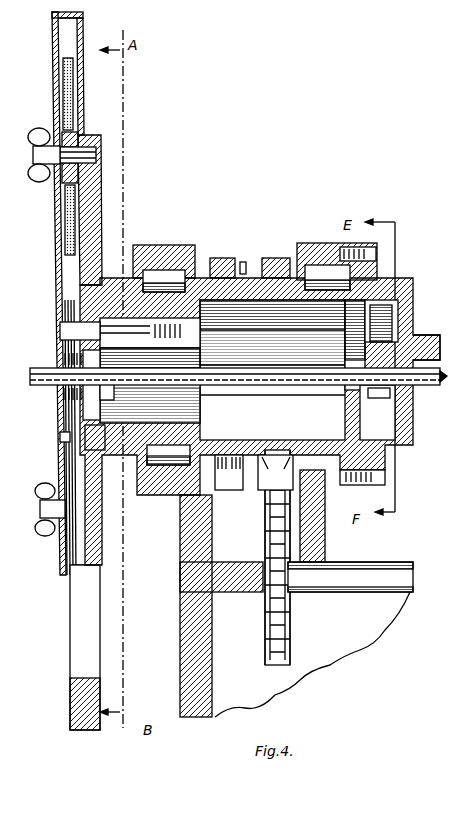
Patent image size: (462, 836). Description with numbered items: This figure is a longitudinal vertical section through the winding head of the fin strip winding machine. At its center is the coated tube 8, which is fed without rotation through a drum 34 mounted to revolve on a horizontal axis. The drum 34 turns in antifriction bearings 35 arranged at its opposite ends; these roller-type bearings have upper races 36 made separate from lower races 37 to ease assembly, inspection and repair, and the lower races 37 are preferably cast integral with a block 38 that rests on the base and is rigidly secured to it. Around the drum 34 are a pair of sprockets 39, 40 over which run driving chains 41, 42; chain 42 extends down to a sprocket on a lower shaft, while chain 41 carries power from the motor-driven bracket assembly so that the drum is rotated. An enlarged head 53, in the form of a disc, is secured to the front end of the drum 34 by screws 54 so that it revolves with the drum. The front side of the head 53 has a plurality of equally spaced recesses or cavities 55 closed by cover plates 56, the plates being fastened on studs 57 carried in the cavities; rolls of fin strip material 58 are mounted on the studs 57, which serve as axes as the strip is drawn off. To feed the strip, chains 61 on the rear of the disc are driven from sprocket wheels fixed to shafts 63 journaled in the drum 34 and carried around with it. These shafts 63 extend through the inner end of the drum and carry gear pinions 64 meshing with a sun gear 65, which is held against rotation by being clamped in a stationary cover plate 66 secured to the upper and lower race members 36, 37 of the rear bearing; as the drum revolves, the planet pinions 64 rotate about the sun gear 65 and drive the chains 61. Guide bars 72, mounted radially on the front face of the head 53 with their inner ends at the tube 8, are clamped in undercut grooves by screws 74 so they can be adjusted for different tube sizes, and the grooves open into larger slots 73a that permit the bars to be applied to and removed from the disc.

The coated tube 8 is at (242, 377).
The drum 34 is at (240, 276).
The antifriction bearings 35 is at (157, 278).
The upper races 36 is at (188, 255).
The lower races 37 is at (162, 483).
The block 38 is at (183, 545).
The sprocket 39 is at (226, 486).
The sprocket 40 is at (265, 470).
The driving chain 41 is at (225, 262).
The driving chain 42 is at (282, 266).
The head 53 is at (82, 698).
The screws 54 is at (70, 320).
The recesses or cavities 55 is at (68, 48).
The cover plates 56 is at (62, 272).
The studs 57 is at (33, 152).
The fin strip material 58 is at (70, 215).
The chains 61 is at (108, 385).
The shafts 63 is at (288, 322).
The gear pinions 64 is at (382, 316).
The sun gear 65 is at (378, 396).
The cover plate 66 is at (398, 446).
The guide bars 72 is at (70, 355).
The slots 73a is at (80, 665).
The screws 74 is at (68, 438).